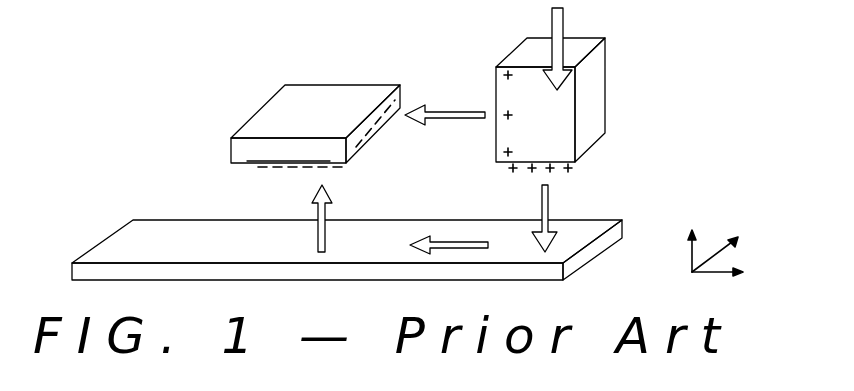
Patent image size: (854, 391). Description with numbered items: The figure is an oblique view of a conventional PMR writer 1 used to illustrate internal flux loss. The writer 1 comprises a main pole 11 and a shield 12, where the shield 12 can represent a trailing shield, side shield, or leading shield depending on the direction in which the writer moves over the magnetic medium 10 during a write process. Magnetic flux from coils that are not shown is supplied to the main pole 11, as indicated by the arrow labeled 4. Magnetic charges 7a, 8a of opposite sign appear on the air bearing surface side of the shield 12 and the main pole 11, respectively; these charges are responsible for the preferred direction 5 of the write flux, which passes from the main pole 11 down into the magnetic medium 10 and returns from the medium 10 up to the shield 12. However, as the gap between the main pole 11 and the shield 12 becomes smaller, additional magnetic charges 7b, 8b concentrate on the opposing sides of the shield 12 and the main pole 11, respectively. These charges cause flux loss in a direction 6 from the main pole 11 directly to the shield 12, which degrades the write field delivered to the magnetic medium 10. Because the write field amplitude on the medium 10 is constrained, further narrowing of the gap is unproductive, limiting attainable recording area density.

The PMR writer 1 is at (233, 63).
The magnetic flux Bs0 entering main pole 4 is at (552, 14).
The preferred direction of flux Bs1 5 is at (535, 200).
The direction of flux loss Bs2 6 is at (447, 123).
The magnetic charges on ABS side of shield 7a is at (268, 172).
The magnetic charges on opposing side of shield 7b is at (404, 93).
The magnetic charges on ABS side of main pole 8a is at (582, 168).
The magnetic charges on opposing side of main pole 8b is at (502, 152).
The magnetic medium 10 is at (127, 245).
The main pole 11 is at (597, 93).
The shield 12 is at (231, 157).